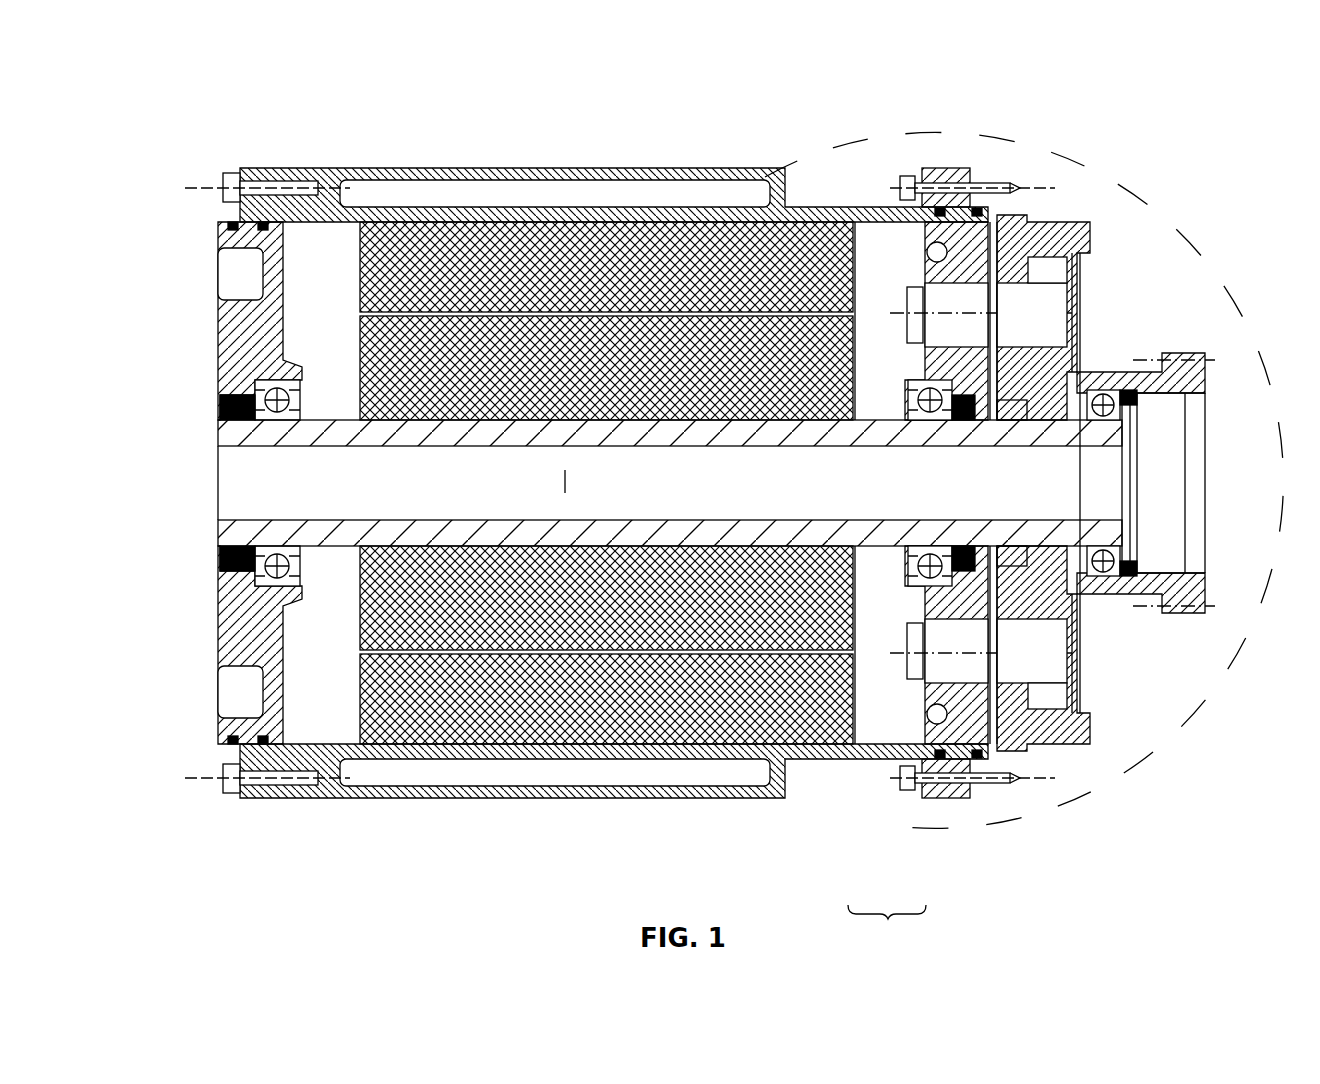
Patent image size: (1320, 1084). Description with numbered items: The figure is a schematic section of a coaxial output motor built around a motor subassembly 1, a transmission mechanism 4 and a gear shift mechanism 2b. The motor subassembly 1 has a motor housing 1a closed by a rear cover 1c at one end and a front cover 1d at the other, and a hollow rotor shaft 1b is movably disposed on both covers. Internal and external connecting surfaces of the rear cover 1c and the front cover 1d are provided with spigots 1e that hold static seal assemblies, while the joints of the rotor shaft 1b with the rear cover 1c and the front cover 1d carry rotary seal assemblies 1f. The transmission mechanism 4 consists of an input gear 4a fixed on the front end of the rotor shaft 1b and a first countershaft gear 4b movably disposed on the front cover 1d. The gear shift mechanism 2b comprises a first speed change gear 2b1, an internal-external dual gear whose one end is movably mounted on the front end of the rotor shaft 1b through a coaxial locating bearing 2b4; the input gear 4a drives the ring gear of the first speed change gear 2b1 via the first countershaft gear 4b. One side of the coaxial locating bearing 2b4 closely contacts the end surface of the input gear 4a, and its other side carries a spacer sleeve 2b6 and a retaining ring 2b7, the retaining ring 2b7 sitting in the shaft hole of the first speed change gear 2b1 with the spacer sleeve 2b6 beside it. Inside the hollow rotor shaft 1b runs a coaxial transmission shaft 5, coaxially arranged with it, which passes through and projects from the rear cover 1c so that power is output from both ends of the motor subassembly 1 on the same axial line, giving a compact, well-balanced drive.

The motor subassembly 1 is at (472, 225).
The motor housing 1a is at (540, 167).
The rotor shaft 1b is at (890, 425).
The rear cover 1c is at (232, 280).
The front cover 1d is at (952, 168).
The spigots 1e is at (977, 213).
The rotary seal assemblies 1f is at (950, 570).
The gear shift mechanism 2b is at (1095, 368).
The first speed change gear 2b1 is at (1057, 735).
The coaxial locating bearing 2b4 is at (1070, 600).
The spacer sleeve 2b6 is at (1128, 387).
The retaining ring 2b7 is at (1133, 382).
The transmission mechanism 4 is at (887, 929).
The input gear 4a is at (990, 552).
The first countershaft gear 4b is at (1013, 547).
The coaxial transmission shaft 5 is at (448, 492).